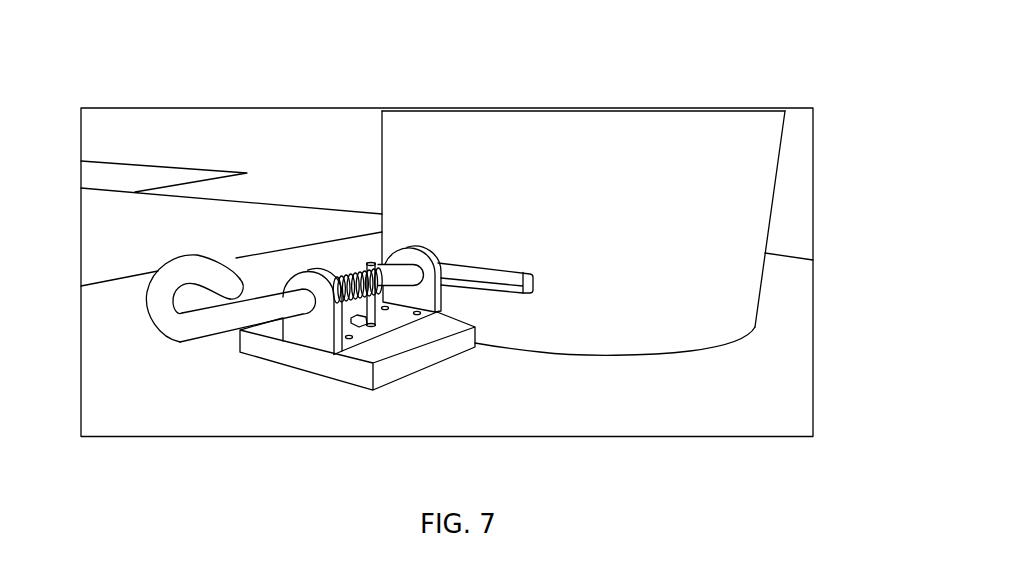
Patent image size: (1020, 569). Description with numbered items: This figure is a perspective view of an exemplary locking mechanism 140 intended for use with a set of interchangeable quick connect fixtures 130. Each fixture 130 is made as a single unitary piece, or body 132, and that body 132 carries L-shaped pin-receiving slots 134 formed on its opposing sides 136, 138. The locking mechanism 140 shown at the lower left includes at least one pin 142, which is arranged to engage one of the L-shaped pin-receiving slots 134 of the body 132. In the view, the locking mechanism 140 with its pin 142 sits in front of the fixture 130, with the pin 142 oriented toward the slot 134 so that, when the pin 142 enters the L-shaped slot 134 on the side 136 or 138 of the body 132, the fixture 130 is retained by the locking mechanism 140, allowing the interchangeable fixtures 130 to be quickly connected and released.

The fixture 130 is at (686, 130).
The body 132 is at (763, 166).
The L-shaped pin-receiving slot 134 is at (511, 282).
The side 136 is at (419, 137).
The side 138 is at (788, 138).
The locking mechanism 140 is at (325, 383).
The pin 142 is at (183, 335).